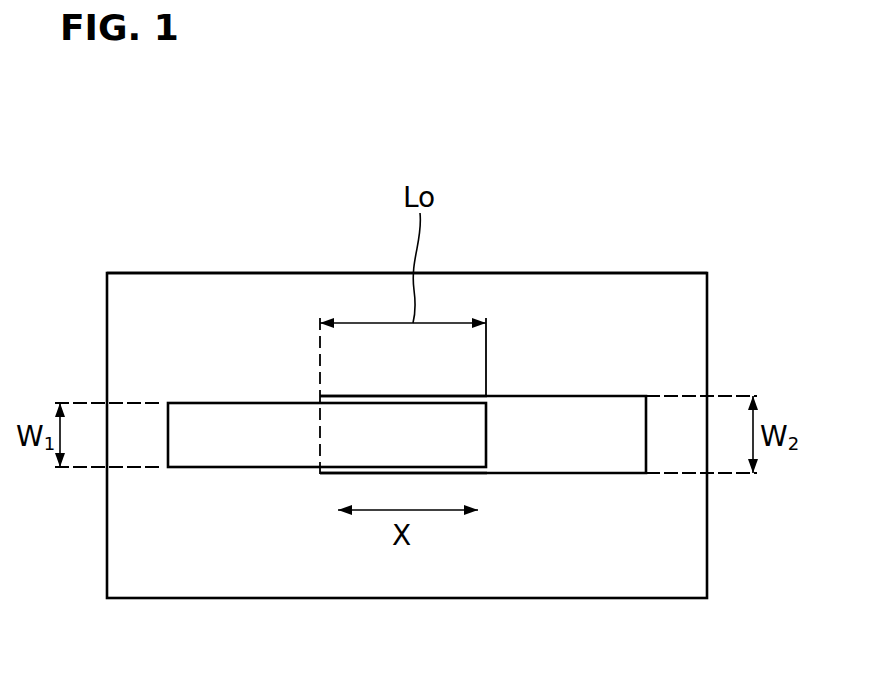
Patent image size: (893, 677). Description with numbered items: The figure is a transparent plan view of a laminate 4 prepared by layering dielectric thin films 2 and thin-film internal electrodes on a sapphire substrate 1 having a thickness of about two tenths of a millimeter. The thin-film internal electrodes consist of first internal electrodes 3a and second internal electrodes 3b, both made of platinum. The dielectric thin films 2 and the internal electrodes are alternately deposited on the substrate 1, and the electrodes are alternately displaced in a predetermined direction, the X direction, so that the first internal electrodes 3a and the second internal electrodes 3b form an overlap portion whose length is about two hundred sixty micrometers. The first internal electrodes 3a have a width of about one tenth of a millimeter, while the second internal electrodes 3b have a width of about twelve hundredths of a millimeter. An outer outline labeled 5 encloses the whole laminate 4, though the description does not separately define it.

The sapphire substrate 1 is at (634, 272).
The dielectric thin film 2 is at (663, 325).
The first internal electrode 3a is at (242, 362).
The second internal electrode 3b is at (554, 476).
The laminate 4 is at (510, 356).
The piezoelectric element 5 is at (145, 262).